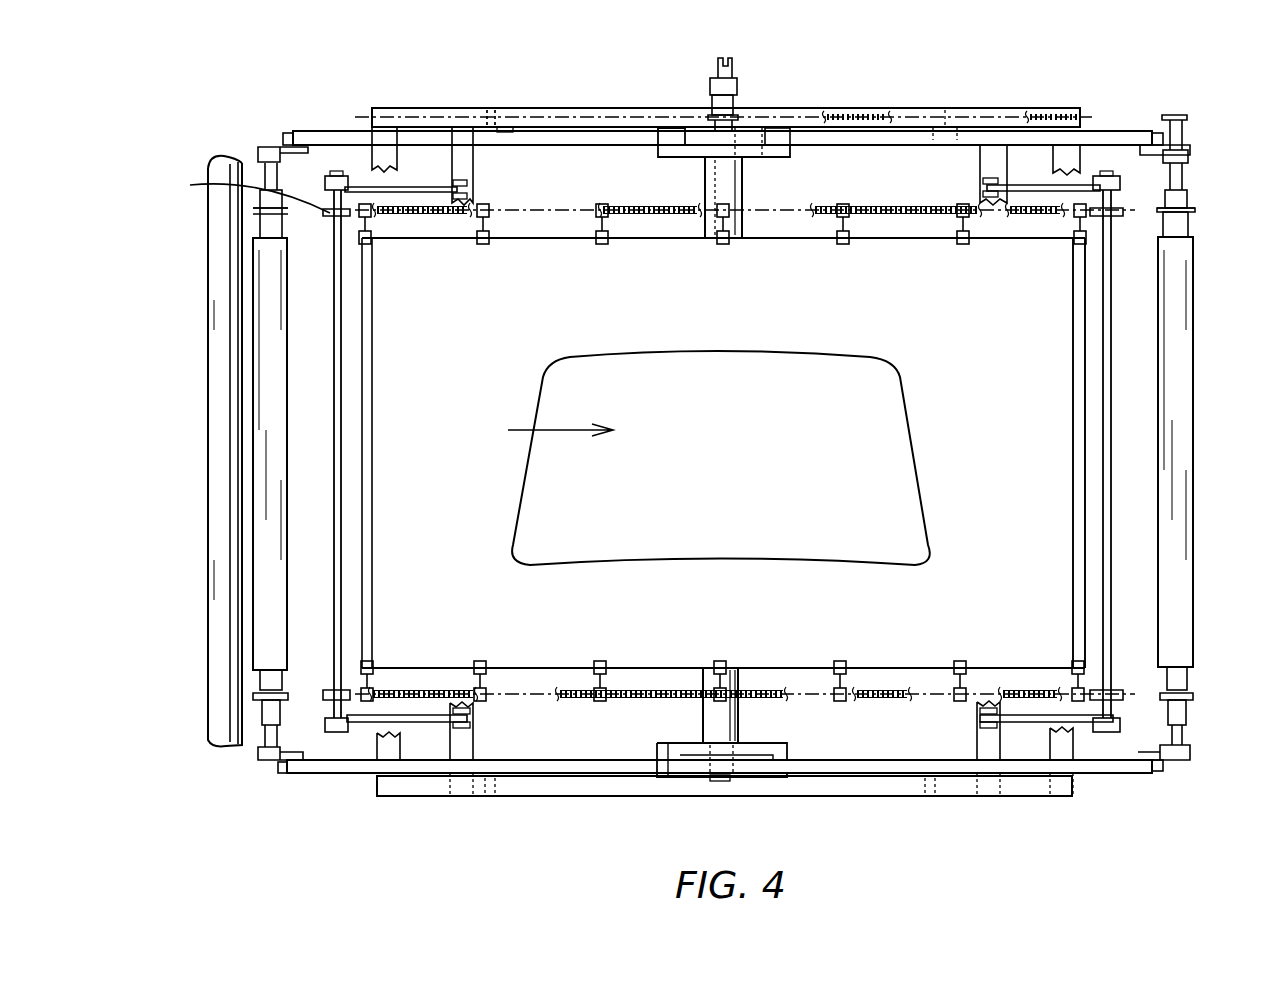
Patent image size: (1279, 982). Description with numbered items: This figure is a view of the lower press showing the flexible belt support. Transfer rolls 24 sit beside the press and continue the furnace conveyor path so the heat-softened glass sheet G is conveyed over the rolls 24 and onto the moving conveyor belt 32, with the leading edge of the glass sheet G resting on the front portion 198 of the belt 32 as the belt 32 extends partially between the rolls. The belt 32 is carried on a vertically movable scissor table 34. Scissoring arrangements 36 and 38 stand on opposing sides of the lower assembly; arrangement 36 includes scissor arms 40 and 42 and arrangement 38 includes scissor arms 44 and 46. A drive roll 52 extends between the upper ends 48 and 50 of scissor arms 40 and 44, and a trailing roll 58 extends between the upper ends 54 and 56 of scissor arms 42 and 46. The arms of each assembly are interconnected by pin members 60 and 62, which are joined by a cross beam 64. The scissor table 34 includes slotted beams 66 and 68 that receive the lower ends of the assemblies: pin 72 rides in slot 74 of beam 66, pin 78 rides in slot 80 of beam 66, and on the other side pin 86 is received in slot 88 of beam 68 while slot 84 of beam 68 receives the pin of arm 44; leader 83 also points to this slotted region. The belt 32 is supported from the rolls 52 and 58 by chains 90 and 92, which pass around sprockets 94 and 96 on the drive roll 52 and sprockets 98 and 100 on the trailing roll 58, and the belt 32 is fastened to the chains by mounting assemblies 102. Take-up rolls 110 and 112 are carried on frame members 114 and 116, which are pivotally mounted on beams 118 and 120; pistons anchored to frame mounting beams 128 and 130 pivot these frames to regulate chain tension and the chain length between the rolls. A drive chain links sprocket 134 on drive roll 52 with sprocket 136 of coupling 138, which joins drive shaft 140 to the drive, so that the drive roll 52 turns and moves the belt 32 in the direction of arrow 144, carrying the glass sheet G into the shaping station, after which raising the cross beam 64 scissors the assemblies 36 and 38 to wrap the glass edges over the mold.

The transfer rolls 24 is at (207, 450).
The conveyor belt 32 is at (555, 236).
The scissor table 34 is at (415, 807).
The scissoring arrangement 36 is at (823, 758).
The scissoring arrangement 38 is at (800, 146).
The scissor arm 40 is at (1108, 774).
The scissor arm 42 is at (597, 758).
The scissor arm 44 is at (900, 146).
The scissor arm 46 is at (600, 135).
The upper end of scissor arm 48 is at (1158, 773).
The upper end of scissor arm 50 is at (1155, 132).
The drive roll 52 is at (1195, 358).
The upper end of scissor arm 54 is at (283, 774).
The upper end of scissor arm 56 is at (290, 132).
The trailing roll 58 is at (285, 322).
The pin member 60 is at (735, 750).
The pin member 62 is at (705, 148).
The cross beam 64 is at (742, 176).
The slotted beam 66 is at (1043, 797).
The slotted beam 68 is at (1015, 108).
The pin 72 is at (515, 776).
The slot 74 is at (545, 776).
The pin 78 is at (927, 776).
The slot 80 is at (900, 776).
The slot 83 is at (517, 122).
The slot 84 is at (527, 122).
The pin 86 is at (920, 120).
The slot 88 is at (905, 120).
The chain 90 is at (668, 700).
The chain 92 is at (872, 206).
The sprocket 94 is at (1193, 697).
The sprocket 96 is at (1195, 210).
The sprocket 98 is at (288, 692).
The sprocket 100 is at (190, 185).
The mounting assembly 102 is at (850, 218).
The take-up roll 110 is at (1112, 376).
The take-up roll 112 is at (336, 330).
The frame member 114 is at (1050, 186).
The frame member 116 is at (435, 187).
The beam 118 is at (980, 188).
The beam 120 is at (473, 158).
The frame mounting beam 128 is at (1080, 160).
The frame mounting beam 130 is at (372, 160).
The sprocket 134 is at (1182, 115).
The sprocket 136 is at (708, 118).
The coupling 138 is at (738, 100).
The drive shaft 140 is at (730, 62).
The arrow 144 is at (565, 426).
The front portion of belt 198 is at (1065, 258).
The glass sheet G is at (815, 352).